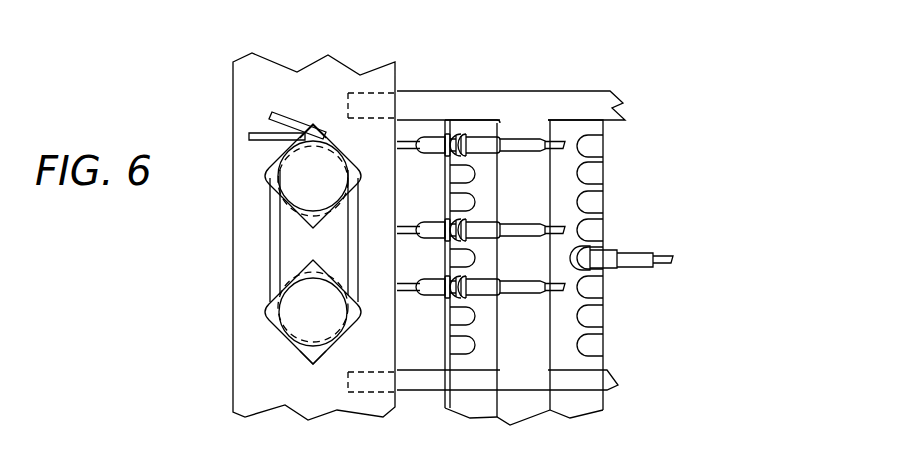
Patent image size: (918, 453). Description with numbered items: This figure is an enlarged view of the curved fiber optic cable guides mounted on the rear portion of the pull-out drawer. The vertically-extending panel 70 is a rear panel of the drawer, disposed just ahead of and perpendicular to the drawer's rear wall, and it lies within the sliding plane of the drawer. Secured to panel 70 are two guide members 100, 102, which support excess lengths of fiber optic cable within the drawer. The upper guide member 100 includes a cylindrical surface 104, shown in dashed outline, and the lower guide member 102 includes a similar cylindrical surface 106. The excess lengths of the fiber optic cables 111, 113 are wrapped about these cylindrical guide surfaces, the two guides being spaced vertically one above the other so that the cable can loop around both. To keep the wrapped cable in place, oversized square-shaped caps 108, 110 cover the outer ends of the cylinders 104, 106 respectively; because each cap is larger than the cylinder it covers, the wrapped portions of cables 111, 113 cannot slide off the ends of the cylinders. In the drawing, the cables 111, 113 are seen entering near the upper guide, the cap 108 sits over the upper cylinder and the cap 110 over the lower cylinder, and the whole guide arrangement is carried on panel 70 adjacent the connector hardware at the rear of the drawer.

The vertically-extending panel 70 is at (245, 392).
The guide member 100 is at (266, 197).
The guide member 102 is at (266, 298).
The cylindrical surface 104 is at (282, 180).
The cylindrical surface 106 is at (290, 262).
The square-shaped cap 108 is at (313, 126).
The square-shaped cap 110 is at (313, 364).
The fiber optic cable 111 is at (262, 133).
The fiber optic cable 113 is at (282, 112).